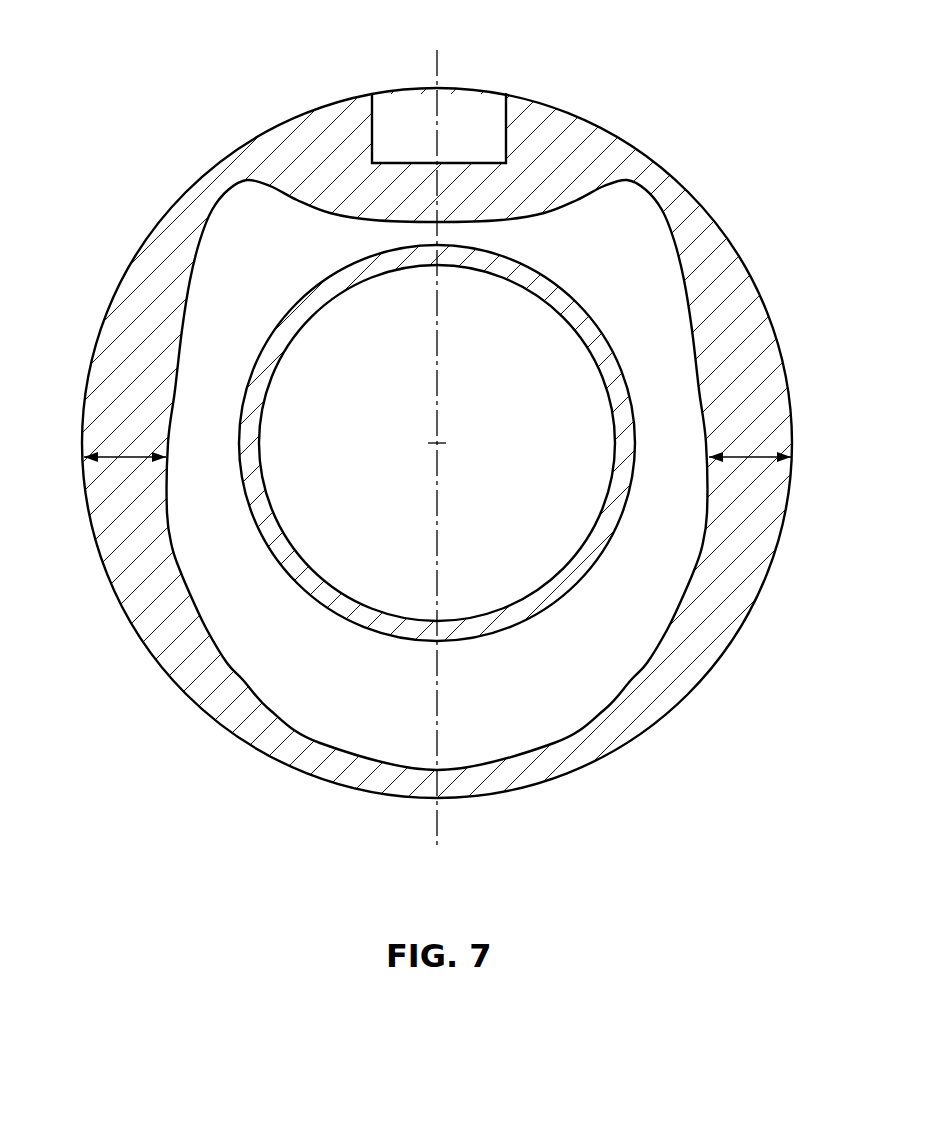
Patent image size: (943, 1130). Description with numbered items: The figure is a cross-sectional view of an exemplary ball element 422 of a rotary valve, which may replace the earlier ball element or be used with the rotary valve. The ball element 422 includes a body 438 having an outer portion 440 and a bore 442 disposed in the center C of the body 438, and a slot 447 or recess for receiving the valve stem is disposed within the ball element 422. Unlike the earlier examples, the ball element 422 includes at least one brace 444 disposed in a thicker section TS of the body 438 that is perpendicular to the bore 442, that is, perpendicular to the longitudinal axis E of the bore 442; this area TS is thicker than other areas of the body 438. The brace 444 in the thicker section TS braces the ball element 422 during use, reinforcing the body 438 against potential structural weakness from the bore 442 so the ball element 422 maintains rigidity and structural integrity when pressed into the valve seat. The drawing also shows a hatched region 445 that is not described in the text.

The ball element 422 is at (116, 157).
The body 438 is at (138, 522).
The outer portion 440 is at (158, 657).
The bore 442 is at (326, 552).
The brace 444 is at (126, 414).
The cavity 445 is at (586, 676).
The slot 447 is at (372, 128).